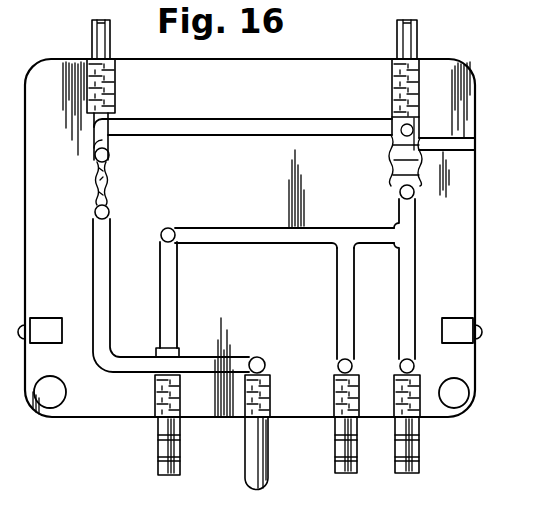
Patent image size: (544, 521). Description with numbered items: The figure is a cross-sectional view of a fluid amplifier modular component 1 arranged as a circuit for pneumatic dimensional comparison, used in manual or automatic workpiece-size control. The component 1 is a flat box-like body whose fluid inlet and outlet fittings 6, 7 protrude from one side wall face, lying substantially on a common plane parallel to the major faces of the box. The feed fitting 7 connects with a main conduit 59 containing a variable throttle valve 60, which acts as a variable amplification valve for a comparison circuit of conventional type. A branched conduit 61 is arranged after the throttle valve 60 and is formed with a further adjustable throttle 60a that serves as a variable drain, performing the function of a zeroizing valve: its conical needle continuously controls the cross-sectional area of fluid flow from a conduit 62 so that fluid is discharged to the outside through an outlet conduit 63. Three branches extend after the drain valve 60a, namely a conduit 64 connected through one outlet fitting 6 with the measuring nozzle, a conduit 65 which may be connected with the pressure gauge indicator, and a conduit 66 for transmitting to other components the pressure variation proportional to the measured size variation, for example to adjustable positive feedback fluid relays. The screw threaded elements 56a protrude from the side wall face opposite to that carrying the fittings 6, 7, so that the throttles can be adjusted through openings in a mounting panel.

The fluid amplifier modular component 1 is at (331, 60).
The screw threaded element 56a is at (97, 35).
The variable throttle valve 60 is at (112, 167).
The adjustable throttle 60a is at (389, 169).
The branched conduit 61 is at (230, 128).
The conduit 62 is at (408, 210).
The outlet conduit 63 is at (465, 147).
The conduit 64 is at (405, 270).
The conduit 65 is at (348, 305).
The conduit 66 is at (171, 270).
The main conduit 59 is at (233, 362).
The fluid inlet and outlet fitting 6 is at (163, 470).
The feed fitting 7 is at (259, 443).